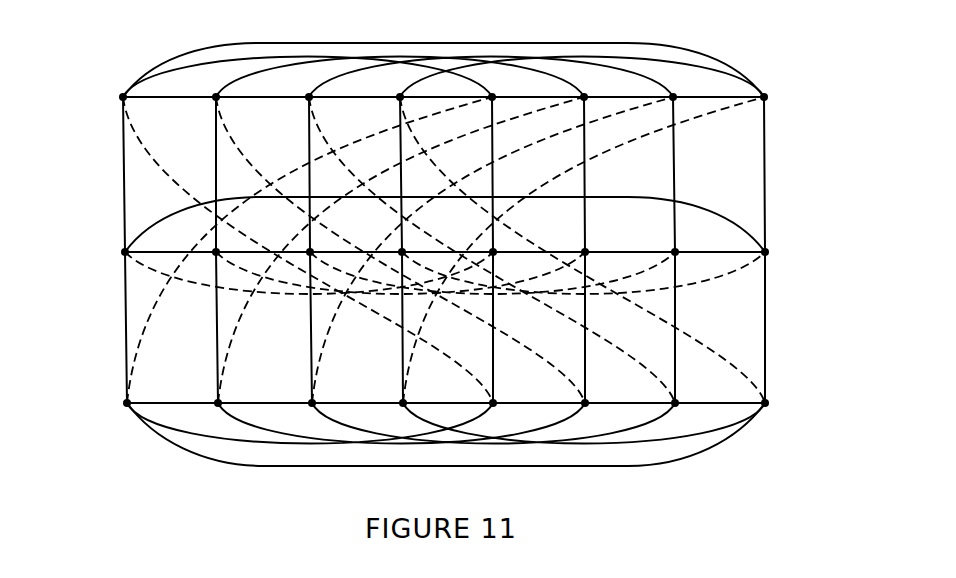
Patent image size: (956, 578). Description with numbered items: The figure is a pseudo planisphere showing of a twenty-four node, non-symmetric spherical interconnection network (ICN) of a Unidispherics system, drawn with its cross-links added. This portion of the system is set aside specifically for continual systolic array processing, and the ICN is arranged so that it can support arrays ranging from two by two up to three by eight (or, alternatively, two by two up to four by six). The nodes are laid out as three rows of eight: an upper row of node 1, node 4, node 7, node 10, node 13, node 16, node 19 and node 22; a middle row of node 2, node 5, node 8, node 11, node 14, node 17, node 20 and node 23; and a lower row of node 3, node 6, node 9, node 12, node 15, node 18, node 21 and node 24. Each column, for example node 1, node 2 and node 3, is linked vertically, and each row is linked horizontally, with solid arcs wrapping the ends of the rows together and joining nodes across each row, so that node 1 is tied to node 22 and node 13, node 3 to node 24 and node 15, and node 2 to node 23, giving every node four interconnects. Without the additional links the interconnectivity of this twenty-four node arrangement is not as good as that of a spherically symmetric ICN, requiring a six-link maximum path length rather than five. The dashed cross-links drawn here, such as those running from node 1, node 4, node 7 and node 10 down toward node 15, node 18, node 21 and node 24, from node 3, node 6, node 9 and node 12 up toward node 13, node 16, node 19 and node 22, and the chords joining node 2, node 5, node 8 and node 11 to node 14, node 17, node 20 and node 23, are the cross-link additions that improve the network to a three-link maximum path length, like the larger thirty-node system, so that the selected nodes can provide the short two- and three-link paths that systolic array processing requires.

The node 1 is at (122, 95).
The node 2 is at (124, 251).
The node 3 is at (126, 403).
The node 4 is at (215, 95).
The node 5 is at (216, 250).
The node 6 is at (217, 402).
The node 7 is at (309, 95).
The node 8 is at (310, 250).
The node 9 is at (311, 402).
The node 10 is at (400, 95).
The node 11 is at (403, 250).
The node 12 is at (403, 402).
The node 13 is at (493, 95).
The node 14 is at (494, 250).
The node 15 is at (494, 402).
The node 16 is at (584, 95).
The node 17 is at (586, 251).
The node 18 is at (586, 402).
The node 19 is at (674, 95).
The node 20 is at (676, 251).
The node 21 is at (676, 402).
The node 22 is at (765, 95).
The node 23 is at (766, 251).
The node 24 is at (766, 404).